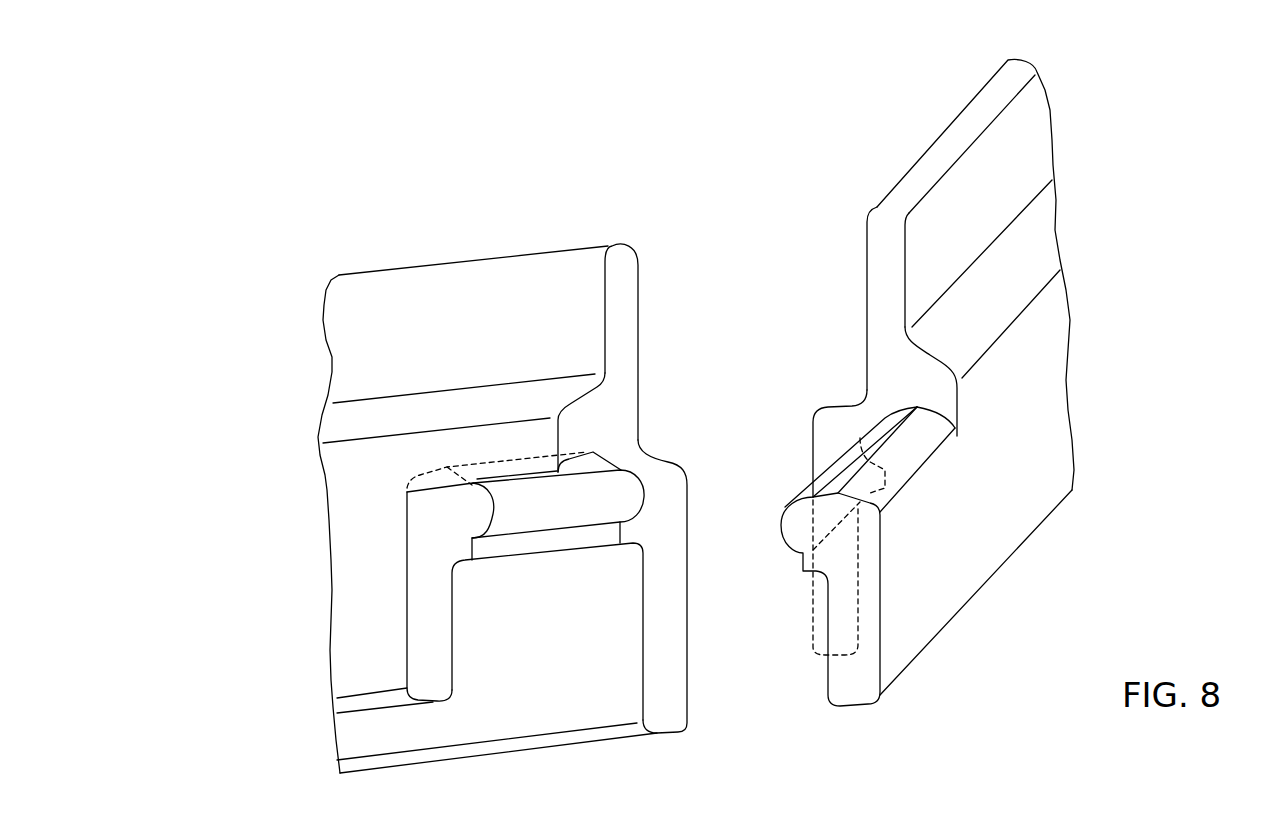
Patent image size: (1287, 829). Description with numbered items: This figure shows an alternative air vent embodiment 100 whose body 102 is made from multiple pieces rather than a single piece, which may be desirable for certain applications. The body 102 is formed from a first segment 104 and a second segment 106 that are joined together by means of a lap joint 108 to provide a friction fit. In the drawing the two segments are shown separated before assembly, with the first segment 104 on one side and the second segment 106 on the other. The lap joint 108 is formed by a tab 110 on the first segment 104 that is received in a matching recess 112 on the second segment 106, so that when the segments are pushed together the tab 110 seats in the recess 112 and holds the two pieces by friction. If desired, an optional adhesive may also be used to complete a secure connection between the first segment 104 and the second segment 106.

The air vent embodiment 100 is at (486, 146).
The body 102 is at (878, 328).
The first segment 104 is at (1038, 263).
The second segment 106 is at (338, 495).
The lap joint 108 is at (860, 756).
The tab 110 is at (845, 682).
The recess 112 is at (508, 593).